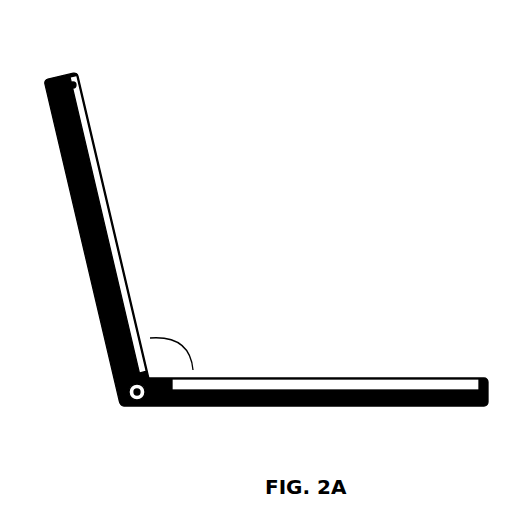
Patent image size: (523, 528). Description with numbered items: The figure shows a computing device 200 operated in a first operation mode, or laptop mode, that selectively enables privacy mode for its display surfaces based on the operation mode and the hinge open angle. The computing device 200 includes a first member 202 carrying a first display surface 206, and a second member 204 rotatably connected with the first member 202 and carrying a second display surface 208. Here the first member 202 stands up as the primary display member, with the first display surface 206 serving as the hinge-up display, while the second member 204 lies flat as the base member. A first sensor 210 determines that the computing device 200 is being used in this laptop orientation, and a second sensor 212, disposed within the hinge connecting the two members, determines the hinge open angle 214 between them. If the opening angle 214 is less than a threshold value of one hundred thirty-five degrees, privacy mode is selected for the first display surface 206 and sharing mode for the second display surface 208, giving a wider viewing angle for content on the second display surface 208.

The computing device 200 is at (386, 101).
The first member 202 is at (109, 350).
The second member 204 is at (203, 407).
The first display surface 206 is at (107, 196).
The second display surface 208 is at (333, 378).
The first sensor 210 is at (76, 86).
The second sensor 212 is at (133, 408).
The hinge open angle 214 is at (180, 329).